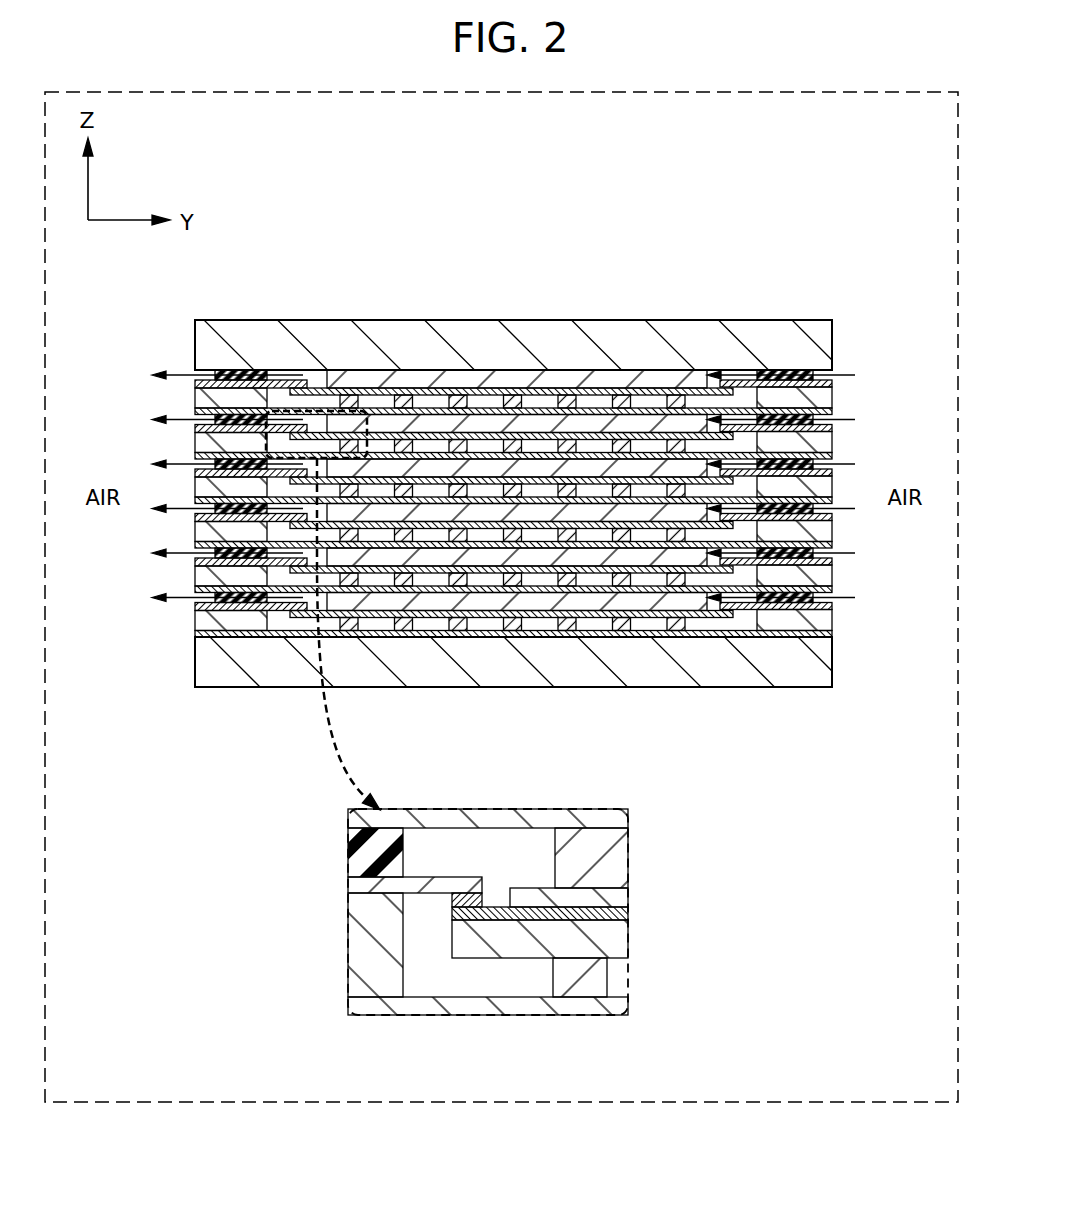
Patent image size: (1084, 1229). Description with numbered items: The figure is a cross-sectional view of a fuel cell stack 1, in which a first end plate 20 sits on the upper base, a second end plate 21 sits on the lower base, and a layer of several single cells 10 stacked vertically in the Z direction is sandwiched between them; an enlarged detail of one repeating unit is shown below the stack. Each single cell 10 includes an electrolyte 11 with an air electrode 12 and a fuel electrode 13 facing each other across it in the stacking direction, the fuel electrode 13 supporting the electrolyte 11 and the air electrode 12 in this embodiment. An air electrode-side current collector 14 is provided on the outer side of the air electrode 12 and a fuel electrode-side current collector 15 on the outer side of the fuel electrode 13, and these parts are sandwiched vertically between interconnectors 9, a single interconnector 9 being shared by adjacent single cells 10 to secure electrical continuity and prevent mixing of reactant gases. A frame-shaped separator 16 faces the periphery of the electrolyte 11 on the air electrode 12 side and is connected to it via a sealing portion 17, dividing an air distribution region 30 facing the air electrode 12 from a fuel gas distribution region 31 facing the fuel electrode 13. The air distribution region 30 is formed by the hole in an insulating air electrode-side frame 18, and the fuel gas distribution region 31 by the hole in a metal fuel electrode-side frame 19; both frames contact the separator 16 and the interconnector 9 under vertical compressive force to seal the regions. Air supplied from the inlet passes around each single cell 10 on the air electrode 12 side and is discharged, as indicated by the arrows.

The fuel cell stack 1 is at (196, 746).
The interconnector 9 is at (376, 410).
The single cell 10 is at (557, 391).
The electrolyte 11 is at (620, 913).
The air electrode 12 is at (620, 897).
The fuel electrode 13 is at (620, 935).
The air electrode-side current collector 14 is at (598, 378).
The fuel electrode-side current collector 15 is at (512, 402).
The separator 16 is at (294, 381).
The sealing portion 17 is at (430, 900).
The air electrode-side frame 18 is at (231, 418).
The fuel electrode-side frame 19 is at (218, 400).
The first end plate 20 is at (770, 340).
The second end plate 21 is at (765, 660).
The air distribution region 30 is at (452, 866).
The fuel gas distribution region 31 is at (452, 989).